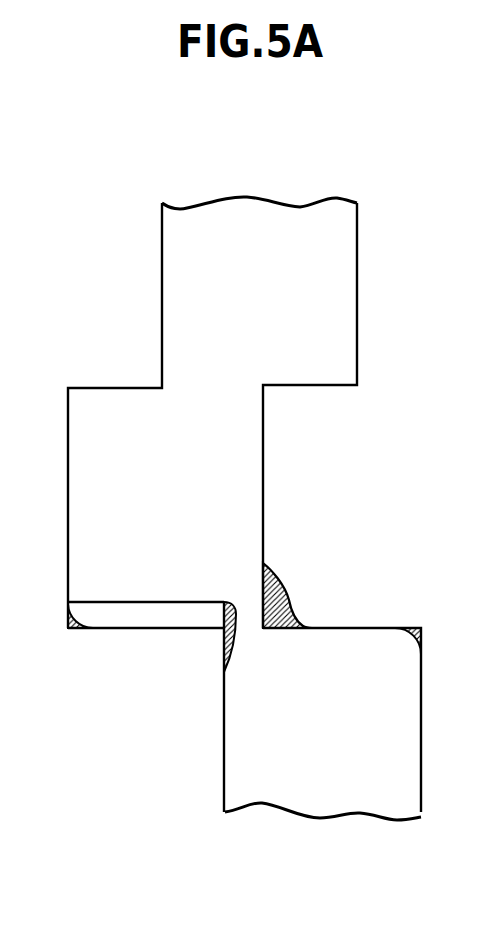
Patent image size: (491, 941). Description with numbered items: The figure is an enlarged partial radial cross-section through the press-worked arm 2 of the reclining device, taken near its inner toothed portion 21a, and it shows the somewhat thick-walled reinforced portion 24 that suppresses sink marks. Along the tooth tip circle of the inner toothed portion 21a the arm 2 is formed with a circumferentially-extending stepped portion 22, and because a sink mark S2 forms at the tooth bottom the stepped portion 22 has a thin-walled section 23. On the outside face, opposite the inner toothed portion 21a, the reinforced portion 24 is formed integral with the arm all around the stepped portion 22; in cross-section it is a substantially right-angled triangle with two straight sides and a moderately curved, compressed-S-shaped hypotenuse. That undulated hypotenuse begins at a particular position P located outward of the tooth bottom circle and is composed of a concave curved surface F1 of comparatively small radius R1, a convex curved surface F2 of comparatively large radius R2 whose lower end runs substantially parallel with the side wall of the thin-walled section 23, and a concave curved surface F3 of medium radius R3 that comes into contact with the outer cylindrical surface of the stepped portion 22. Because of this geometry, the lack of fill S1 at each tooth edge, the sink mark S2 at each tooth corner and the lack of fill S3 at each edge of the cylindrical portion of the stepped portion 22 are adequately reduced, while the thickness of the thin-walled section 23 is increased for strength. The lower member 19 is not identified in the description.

The arm 2 is at (82, 428).
The punch / lower member 19 is at (224, 787).
The inner toothed portion 21a is at (107, 620).
The stepped portion 22 is at (272, 640).
The thin-walled section 23 is at (247, 640).
The reinforced portion 24 is at (318, 590).
The particular position P is at (266, 565).
The comparatively small radius R1 is at (270, 566).
The comparatively large radius R2 is at (280, 589).
The medium radius R3 is at (303, 609).
The concave curved surface F1 is at (284, 578).
The convex curved surface F2 is at (300, 584).
The concave curved surface F3 is at (298, 627).
The lack of fill S1 is at (66, 625).
The sink mark S2 is at (222, 606).
The lack of fill S3 is at (417, 629).